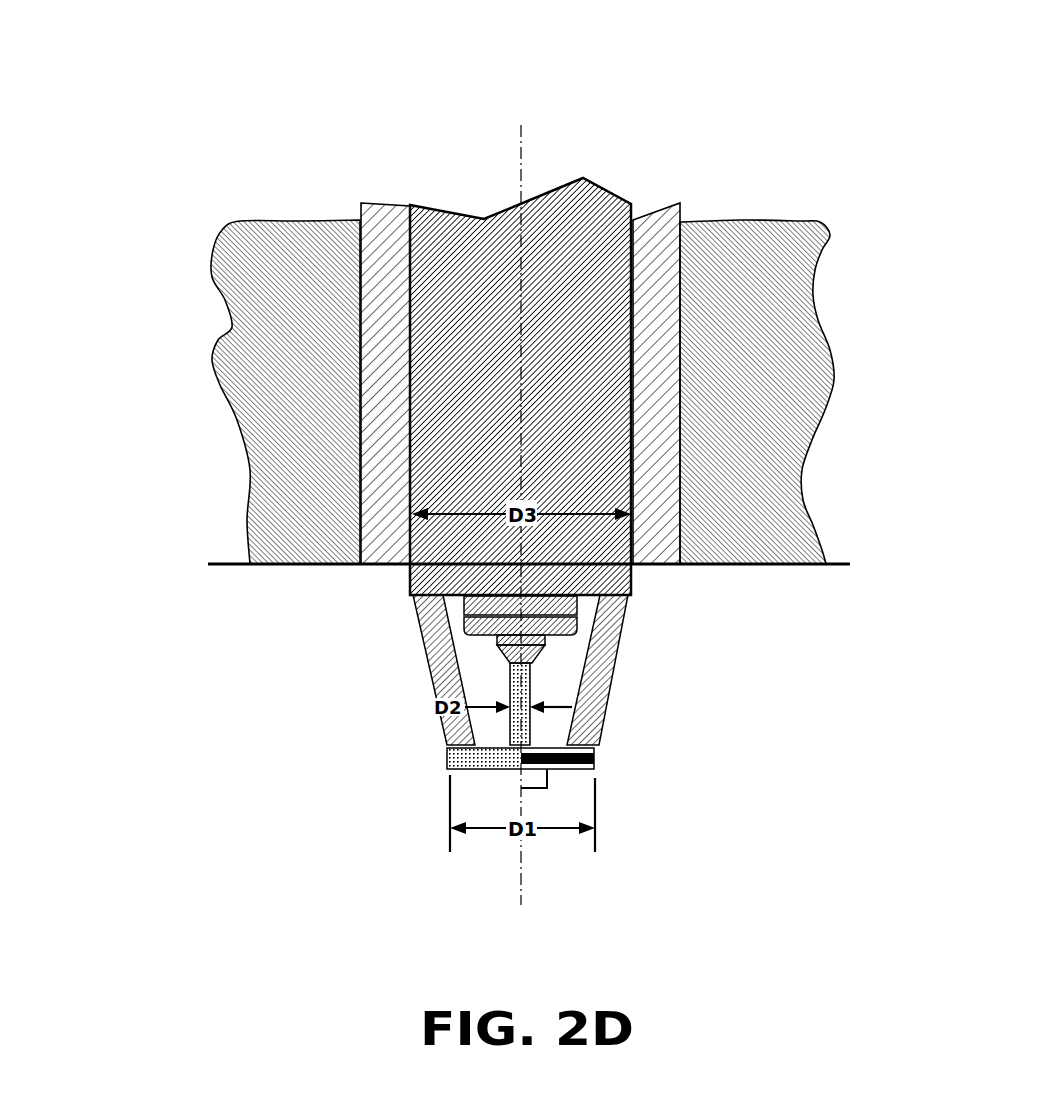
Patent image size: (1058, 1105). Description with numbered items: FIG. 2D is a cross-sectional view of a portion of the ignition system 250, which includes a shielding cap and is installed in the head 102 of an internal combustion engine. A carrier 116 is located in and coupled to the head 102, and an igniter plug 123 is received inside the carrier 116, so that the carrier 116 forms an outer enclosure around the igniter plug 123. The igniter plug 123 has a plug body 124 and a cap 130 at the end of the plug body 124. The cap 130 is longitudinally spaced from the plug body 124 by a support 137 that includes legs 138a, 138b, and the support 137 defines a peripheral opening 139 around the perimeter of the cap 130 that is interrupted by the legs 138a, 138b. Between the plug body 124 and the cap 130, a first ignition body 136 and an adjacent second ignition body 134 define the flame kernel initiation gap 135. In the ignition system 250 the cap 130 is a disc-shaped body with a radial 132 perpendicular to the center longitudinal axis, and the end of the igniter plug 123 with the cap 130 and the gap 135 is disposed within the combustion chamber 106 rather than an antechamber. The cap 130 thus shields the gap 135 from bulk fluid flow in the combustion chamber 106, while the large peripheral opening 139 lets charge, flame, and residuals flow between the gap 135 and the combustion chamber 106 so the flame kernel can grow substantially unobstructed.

The ignition system 250 is at (230, 46).
The igniter plug 123 is at (466, 182).
The carrier 116 is at (390, 235).
The head 102 is at (320, 443).
The plug body 124 is at (520, 386).
The leg 138a is at (432, 631).
The leg 138b is at (618, 620).
The peripheral opening 139 is at (565, 655).
The flame kernel initiation gap 135 is at (488, 686).
The first ignition body 136 is at (533, 688).
The second ignition body 134 is at (512, 729).
The shielding cap 130 is at (447, 758).
The radial 132 is at (572, 769).
The support 137 is at (622, 737).
The combustion chamber 106 is at (446, 936).